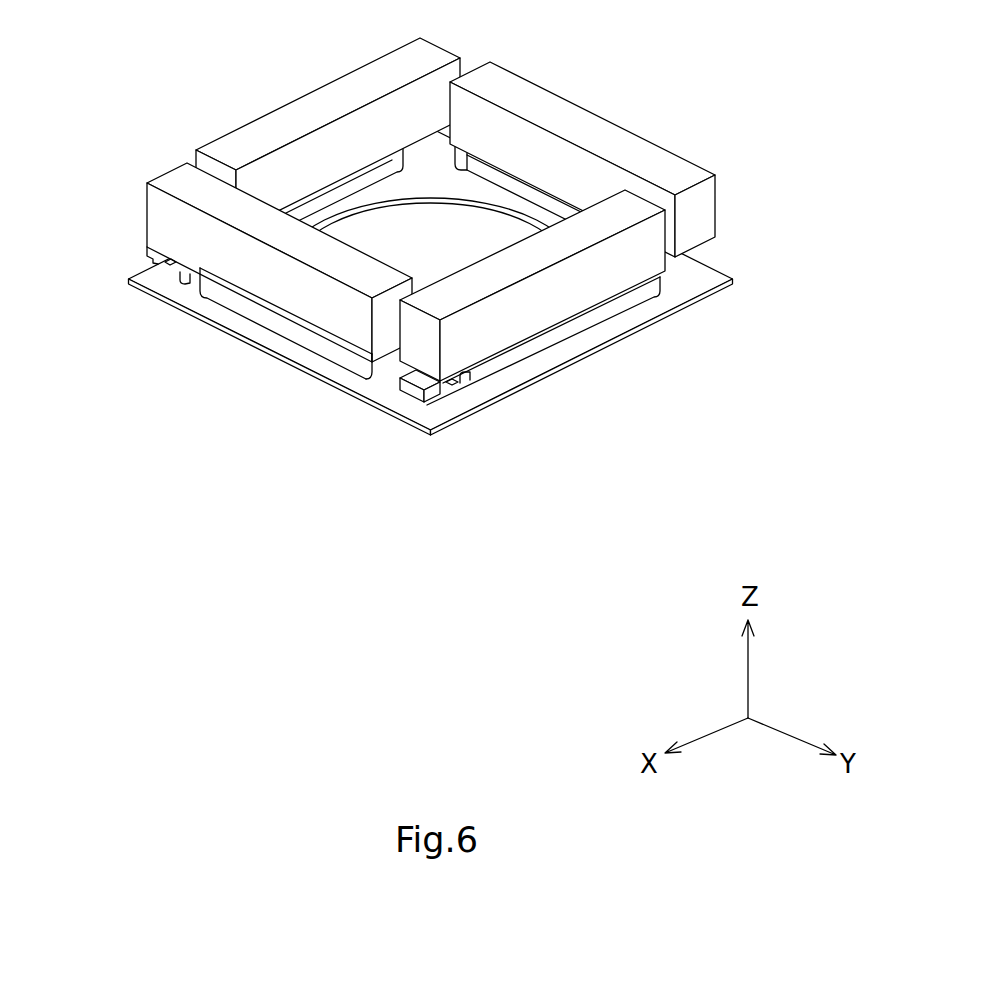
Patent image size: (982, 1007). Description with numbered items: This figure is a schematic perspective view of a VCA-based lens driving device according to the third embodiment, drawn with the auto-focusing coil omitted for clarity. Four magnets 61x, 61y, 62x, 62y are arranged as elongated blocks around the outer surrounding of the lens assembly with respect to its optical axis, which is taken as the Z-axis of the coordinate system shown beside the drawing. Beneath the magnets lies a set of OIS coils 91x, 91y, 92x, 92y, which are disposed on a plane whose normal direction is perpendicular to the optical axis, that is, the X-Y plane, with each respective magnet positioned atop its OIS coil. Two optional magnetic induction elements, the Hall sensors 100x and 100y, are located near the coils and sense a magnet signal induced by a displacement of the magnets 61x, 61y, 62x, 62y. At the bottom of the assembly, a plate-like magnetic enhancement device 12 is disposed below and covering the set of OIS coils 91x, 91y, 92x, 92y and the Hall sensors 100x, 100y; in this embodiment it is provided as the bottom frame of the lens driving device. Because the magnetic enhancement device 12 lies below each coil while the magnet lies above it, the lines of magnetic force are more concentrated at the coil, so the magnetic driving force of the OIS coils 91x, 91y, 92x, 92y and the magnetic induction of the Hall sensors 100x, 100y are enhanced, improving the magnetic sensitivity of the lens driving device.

The magnetic enhancement device 12 is at (530, 387).
The magnet 61x is at (652, 257).
The magnet 61y is at (362, 337).
The magnet 62x is at (333, 97).
The magnet 62y is at (623, 143).
The OIS coil 91x is at (585, 325).
The OIS coil 91y is at (277, 325).
The OIS coil 92x is at (378, 170).
The OIS coil 92y is at (543, 203).
The Hall sensor 100x is at (440, 393).
The Hall sensor 100y is at (160, 265).